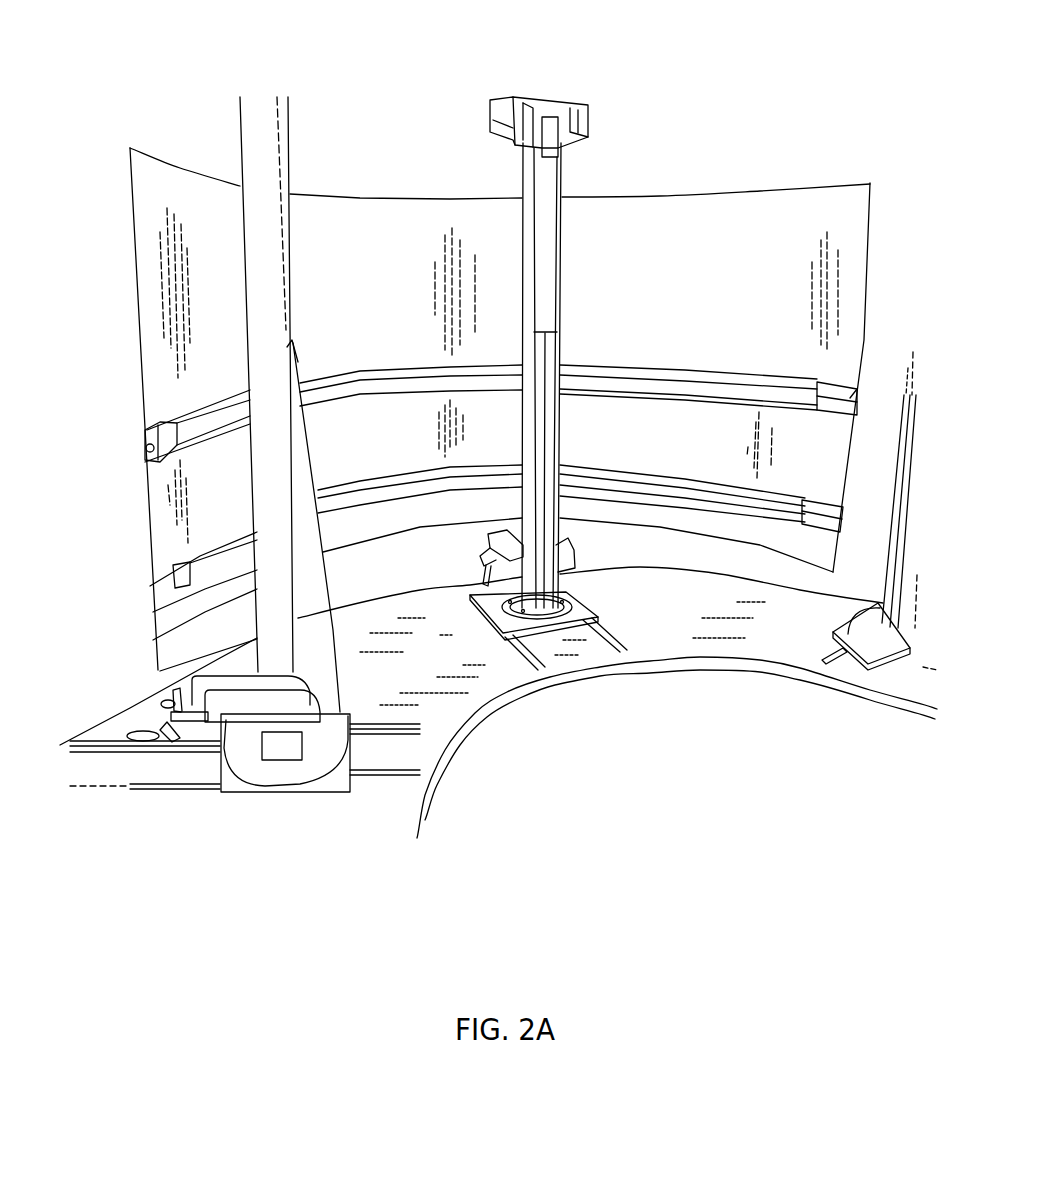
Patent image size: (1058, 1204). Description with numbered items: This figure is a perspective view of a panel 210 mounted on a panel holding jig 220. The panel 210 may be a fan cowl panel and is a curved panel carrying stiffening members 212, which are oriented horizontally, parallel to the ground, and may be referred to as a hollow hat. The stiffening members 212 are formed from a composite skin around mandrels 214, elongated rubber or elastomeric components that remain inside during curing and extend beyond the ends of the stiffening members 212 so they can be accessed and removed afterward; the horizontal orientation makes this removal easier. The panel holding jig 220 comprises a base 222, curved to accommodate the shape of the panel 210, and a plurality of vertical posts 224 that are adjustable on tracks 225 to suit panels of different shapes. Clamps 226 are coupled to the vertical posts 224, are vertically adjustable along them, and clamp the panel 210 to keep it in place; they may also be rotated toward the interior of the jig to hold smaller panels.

The panel 210 is at (500, 347).
The stiffening members 212 is at (732, 372).
The mandrels 214 is at (842, 384).
The panel holding jig 220 is at (662, 757).
The base 222 is at (470, 742).
The vertical posts 224 is at (290, 165).
The tracks 225 is at (160, 797).
The clamps 226 is at (187, 720).